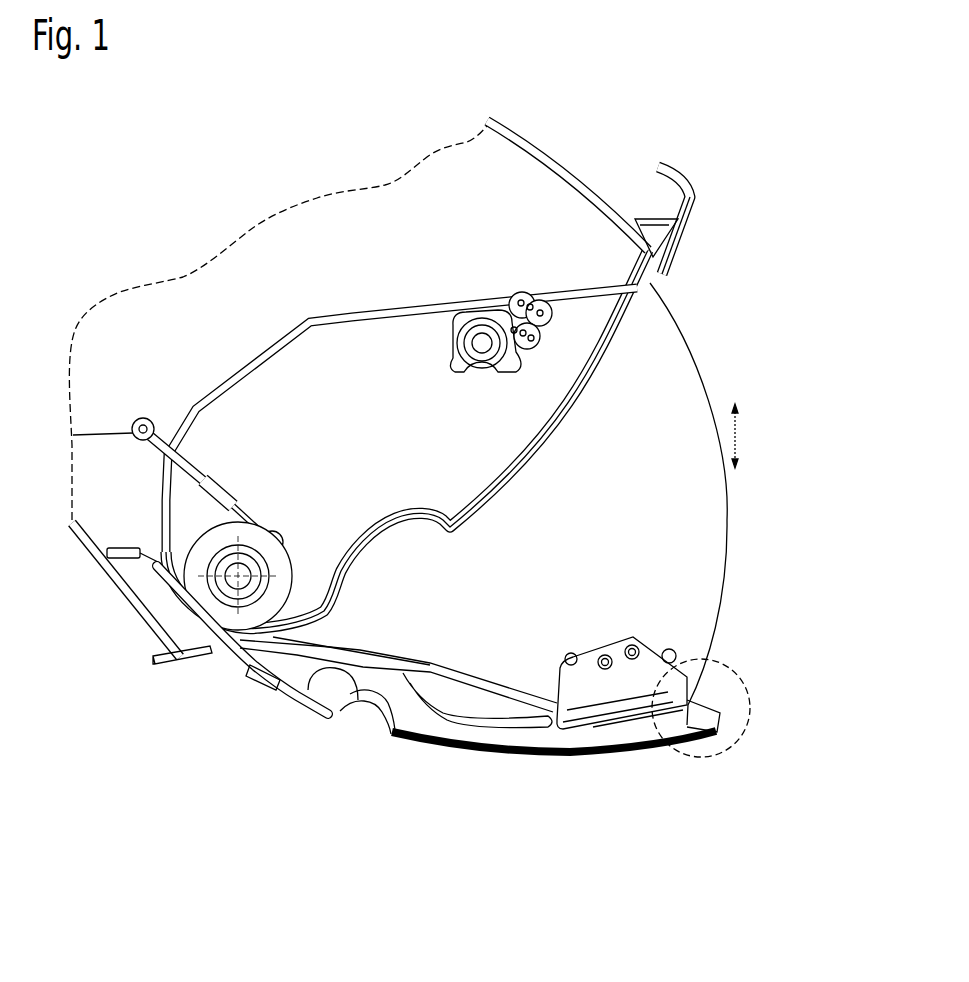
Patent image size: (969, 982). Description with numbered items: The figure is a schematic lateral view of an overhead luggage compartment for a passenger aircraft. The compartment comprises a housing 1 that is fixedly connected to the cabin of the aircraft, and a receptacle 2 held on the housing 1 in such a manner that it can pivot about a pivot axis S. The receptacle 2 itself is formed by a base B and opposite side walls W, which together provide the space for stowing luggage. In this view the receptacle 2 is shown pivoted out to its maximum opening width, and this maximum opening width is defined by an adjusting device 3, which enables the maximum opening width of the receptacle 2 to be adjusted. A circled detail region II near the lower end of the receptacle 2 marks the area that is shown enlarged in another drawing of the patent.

The housing 1 is at (580, 224).
The receptacle 2 is at (703, 553).
The adjusting device 3 is at (507, 297).
The side walls W is at (653, 330).
The pivot axis S is at (238, 576).
The base B is at (575, 757).
The region shown enlarged in FIG. 2 II is at (710, 760).